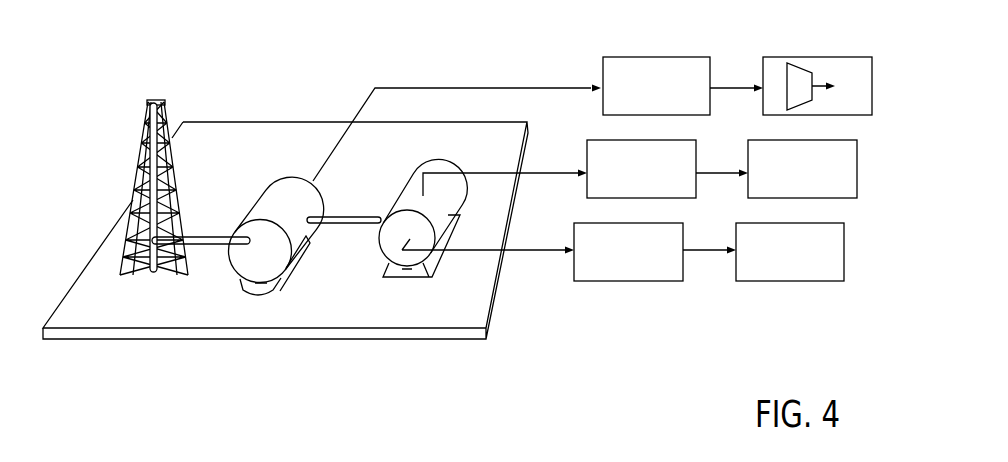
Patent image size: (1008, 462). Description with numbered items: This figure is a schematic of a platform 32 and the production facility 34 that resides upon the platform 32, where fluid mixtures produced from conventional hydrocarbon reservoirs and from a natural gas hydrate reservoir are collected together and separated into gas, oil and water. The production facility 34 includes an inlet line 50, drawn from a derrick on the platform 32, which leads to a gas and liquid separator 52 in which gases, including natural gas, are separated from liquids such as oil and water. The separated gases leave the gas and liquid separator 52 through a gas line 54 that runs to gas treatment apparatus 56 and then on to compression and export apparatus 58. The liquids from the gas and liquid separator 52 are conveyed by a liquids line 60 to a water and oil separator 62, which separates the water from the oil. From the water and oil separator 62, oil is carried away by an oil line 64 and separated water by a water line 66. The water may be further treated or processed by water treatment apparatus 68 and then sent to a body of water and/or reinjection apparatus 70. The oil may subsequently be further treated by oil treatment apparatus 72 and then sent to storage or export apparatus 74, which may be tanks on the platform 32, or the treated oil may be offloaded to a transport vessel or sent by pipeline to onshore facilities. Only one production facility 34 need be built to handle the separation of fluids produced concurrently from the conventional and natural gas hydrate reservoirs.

The platform 32 is at (420, 337).
The production facility 34 is at (263, 176).
The inlet line 50 is at (205, 244).
The gas and liquid separator 52 is at (263, 293).
The gas line 54 is at (397, 88).
The gas treatment apparatus 56 is at (668, 98).
The compression and export apparatus 58 is at (817, 57).
The liquids line 60 is at (350, 217).
The water and oil separator 62 is at (408, 282).
The oil line 64 is at (542, 173).
The water line 66 is at (526, 250).
The water treatment apparatus 68 is at (640, 264).
The body of water and/or reinjection apparatus 70 is at (801, 264).
The oil treatment apparatus 72 is at (653, 181).
The storage or export apparatus 74 is at (814, 181).